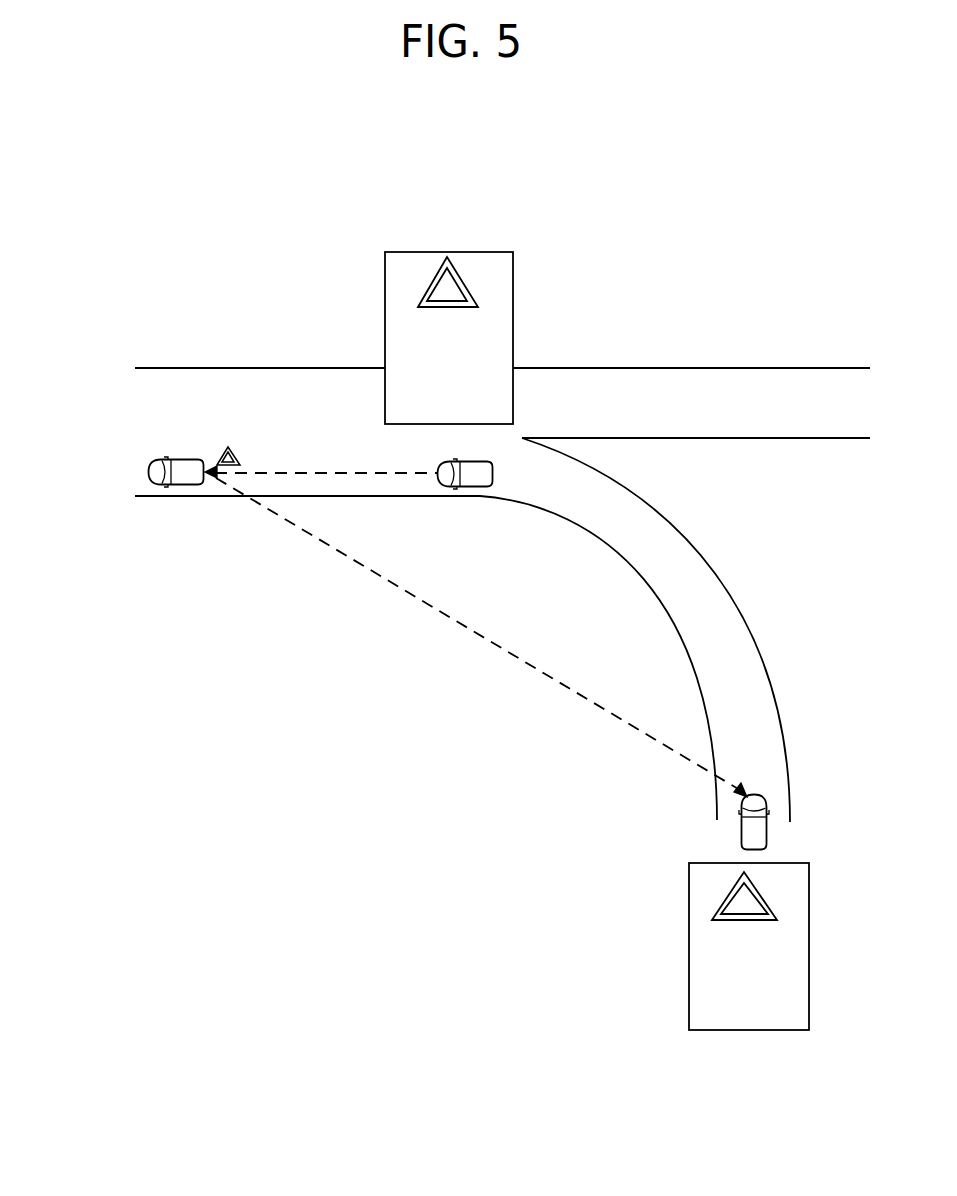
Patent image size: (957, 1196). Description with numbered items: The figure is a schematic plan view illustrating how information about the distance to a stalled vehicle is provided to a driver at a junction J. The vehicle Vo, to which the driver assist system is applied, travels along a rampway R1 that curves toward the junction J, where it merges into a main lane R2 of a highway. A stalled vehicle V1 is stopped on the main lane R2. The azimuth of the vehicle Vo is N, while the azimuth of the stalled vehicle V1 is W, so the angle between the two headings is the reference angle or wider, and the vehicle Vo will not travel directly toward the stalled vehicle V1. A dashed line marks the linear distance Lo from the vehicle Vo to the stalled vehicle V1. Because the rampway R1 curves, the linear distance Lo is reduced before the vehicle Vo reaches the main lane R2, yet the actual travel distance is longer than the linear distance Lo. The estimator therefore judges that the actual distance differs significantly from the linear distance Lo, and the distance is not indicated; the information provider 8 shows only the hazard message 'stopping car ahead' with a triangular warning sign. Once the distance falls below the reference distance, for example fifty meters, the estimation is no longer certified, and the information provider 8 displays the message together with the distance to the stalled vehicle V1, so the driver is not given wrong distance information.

The information provider 8 is at (447, 252).
The main lane R2 is at (305, 400).
The rampway R1 is at (770, 633).
The junction J is at (538, 349).
The azimuth of the stalled vehicle W is at (52, 446).
The azimuth of the vehicle N is at (749, 788).
The stalled vehicle V1 is at (190, 487).
The vehicle Vo is at (470, 490).
The linear distance Lo is at (477, 638).